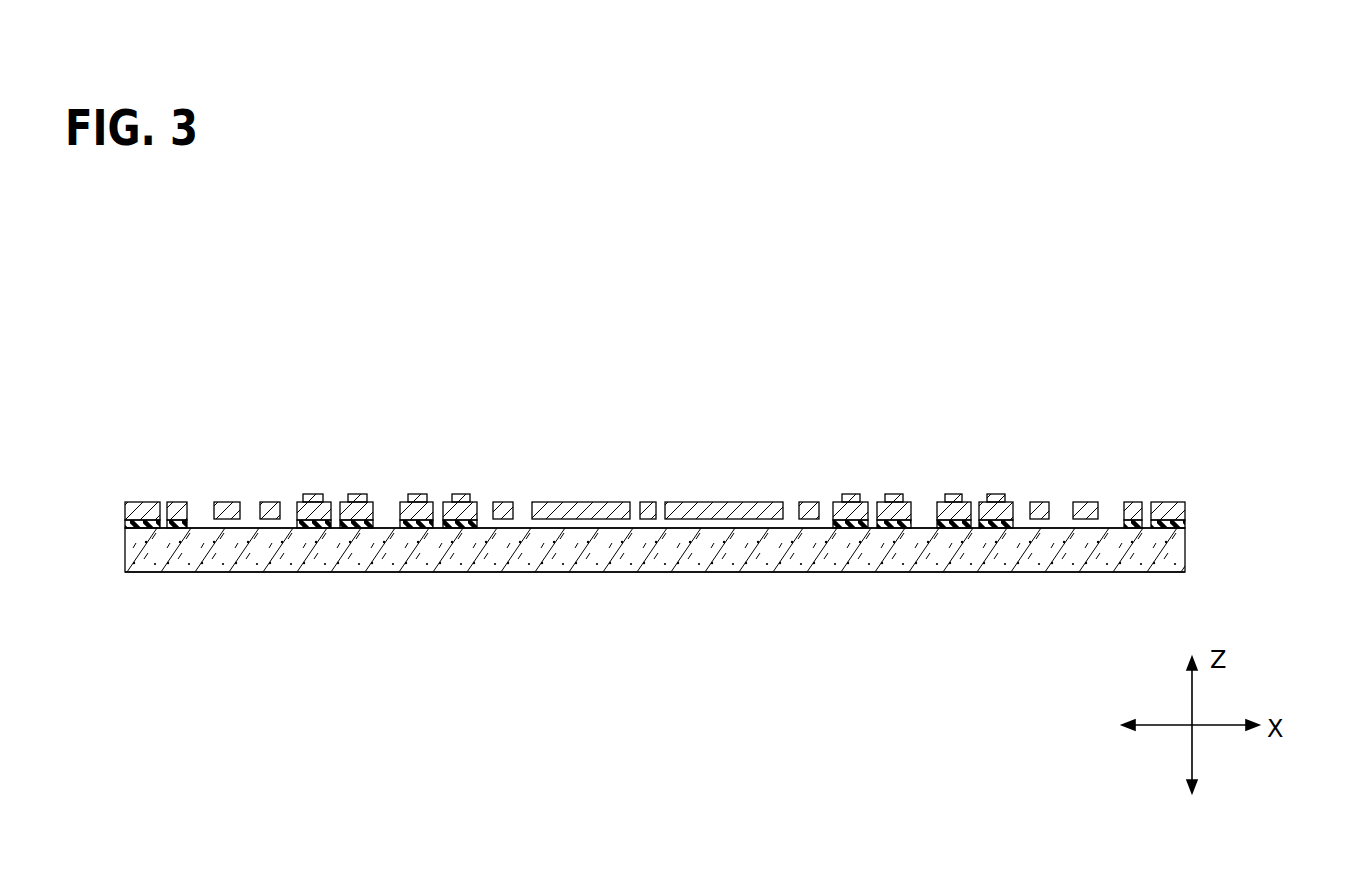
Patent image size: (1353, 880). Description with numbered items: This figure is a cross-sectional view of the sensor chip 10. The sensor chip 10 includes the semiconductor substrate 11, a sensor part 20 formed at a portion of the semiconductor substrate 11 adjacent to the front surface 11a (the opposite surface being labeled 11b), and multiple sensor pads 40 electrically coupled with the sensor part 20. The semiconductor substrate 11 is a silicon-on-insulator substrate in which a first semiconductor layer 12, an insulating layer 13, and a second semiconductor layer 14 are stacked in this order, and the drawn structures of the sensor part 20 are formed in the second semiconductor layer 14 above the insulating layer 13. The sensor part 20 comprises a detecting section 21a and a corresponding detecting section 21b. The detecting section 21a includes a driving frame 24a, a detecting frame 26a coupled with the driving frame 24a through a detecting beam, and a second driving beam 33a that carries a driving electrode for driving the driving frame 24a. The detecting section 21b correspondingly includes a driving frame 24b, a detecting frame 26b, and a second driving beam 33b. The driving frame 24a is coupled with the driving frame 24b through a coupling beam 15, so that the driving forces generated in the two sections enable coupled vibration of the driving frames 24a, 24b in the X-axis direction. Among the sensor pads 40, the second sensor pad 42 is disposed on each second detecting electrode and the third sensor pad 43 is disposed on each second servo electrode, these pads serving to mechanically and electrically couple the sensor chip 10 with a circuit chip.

The sensor chip 10 is at (737, 445).
The semiconductor substrate 11 is at (737, 471).
The front surface 11a is at (130, 502).
The second main surface of substrate 11b is at (126, 572).
The first semiconductor layer 12 is at (1186, 548).
The insulating layer 13 is at (1188, 522).
The second semiconductor layer 14 is at (709, 432).
The coupling beam 15 is at (625, 502).
The sensor part 20 is at (737, 468).
The detecting section 21a is at (482, 406).
The detecting section 21b is at (1021, 406).
The driving frame 24a is at (230, 502).
The driving frame 24b is at (770, 502).
The detecting frame 26a is at (268, 502).
The detecting frame 26b is at (808, 502).
The second driving beam 33a is at (178, 502).
The second driving beam 33b is at (1133, 502).
The sensor pads 40 is at (720, 421).
The second sensor pad 42 is at (311, 494).
The third sensor pad 43 is at (352, 494).